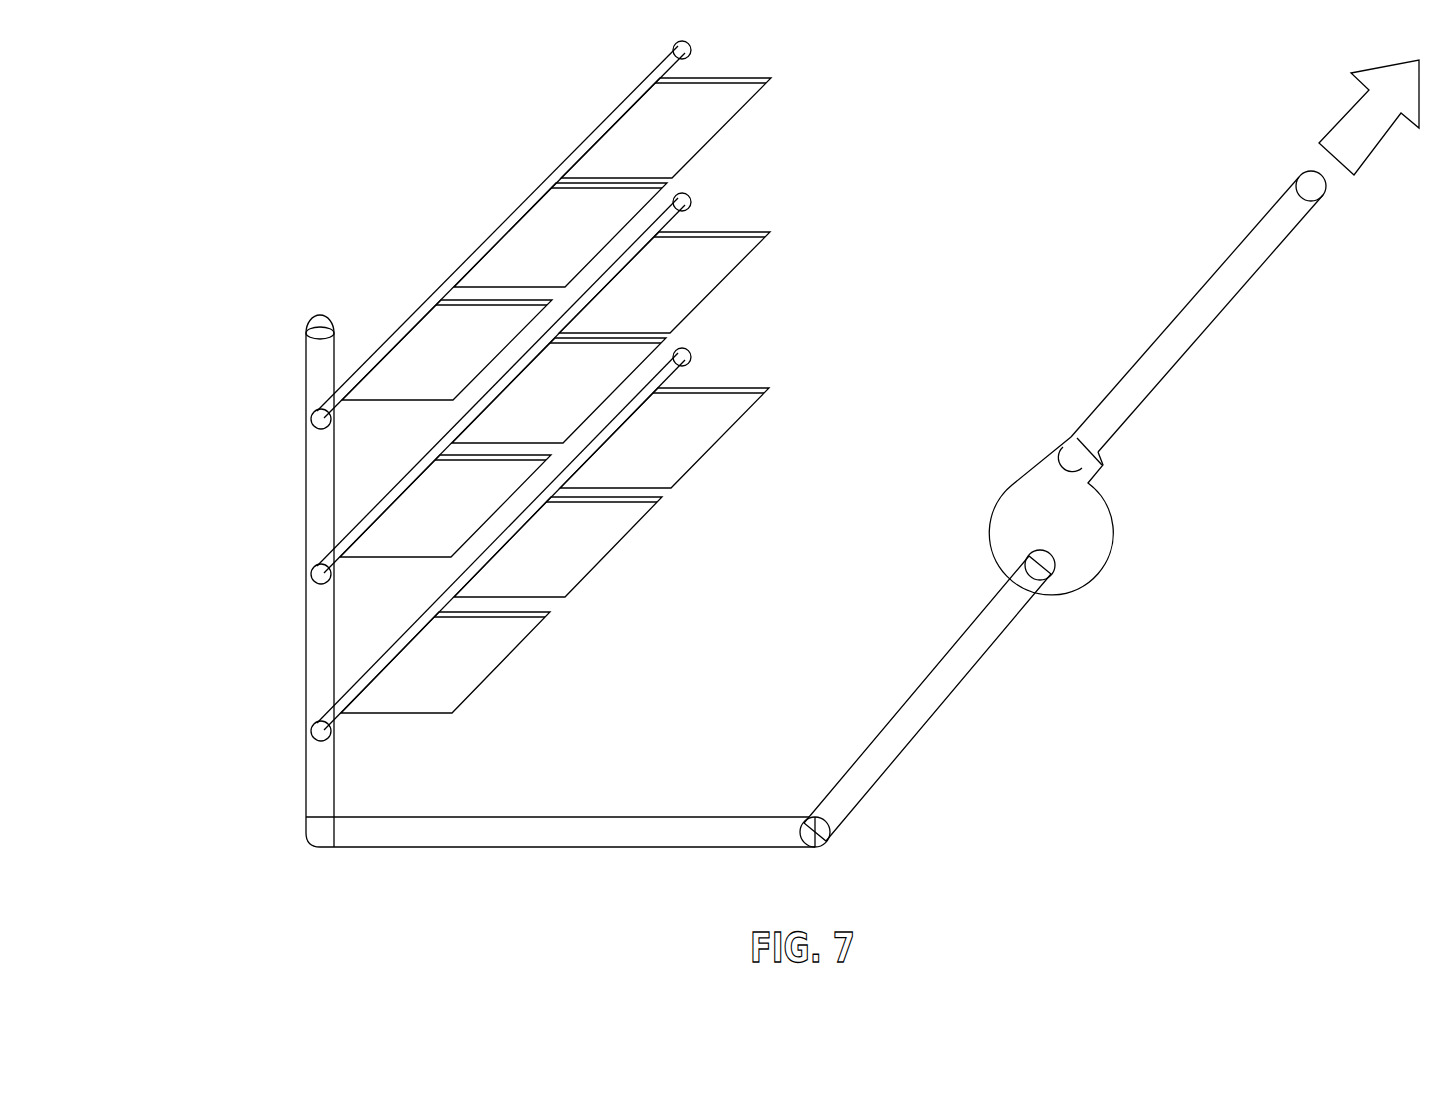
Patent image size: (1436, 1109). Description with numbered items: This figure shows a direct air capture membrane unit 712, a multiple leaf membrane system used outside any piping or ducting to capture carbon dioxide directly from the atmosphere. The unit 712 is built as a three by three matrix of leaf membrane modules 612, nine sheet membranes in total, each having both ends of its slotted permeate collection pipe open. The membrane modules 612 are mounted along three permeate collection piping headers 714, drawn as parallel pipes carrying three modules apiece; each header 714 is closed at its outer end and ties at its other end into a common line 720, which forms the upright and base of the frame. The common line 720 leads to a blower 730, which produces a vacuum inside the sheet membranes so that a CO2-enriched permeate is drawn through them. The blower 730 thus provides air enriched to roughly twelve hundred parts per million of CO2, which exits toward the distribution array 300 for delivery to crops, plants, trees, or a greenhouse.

The direct air capture membrane unit 712 is at (466, 140).
The permeate collection piping header 714 is at (433, 278).
The leaf membrane module 612 is at (742, 115).
The common line 720 is at (275, 549).
The blower 730 is at (1120, 508).
The distribution array 300 is at (1369, 117).